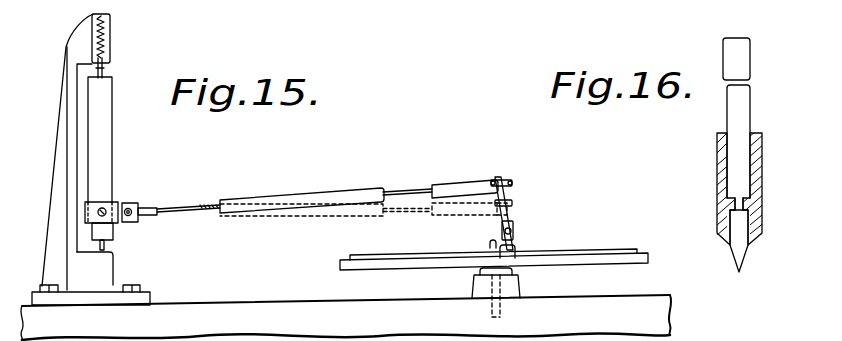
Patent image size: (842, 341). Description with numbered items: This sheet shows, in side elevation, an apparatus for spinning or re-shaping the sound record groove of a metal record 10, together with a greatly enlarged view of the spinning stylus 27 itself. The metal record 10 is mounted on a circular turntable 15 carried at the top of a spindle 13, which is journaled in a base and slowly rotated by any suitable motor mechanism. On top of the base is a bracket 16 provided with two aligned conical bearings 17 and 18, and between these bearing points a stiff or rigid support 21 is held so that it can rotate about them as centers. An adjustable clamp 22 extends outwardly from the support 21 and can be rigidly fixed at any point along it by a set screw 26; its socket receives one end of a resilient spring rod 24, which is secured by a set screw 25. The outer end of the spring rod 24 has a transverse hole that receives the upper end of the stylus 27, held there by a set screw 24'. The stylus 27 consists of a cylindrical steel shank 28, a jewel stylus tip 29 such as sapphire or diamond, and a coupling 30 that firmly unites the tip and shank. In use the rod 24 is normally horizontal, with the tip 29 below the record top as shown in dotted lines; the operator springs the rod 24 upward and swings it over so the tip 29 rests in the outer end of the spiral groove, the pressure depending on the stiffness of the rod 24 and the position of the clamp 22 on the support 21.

In FIG. 15, the metal record 10 is at (598, 248).
In FIG. 15, the spindle 13 is at (518, 283).
In FIG. 15, the turntable 15 is at (655, 256).
In FIG. 15, the bracket 16 is at (73, 132).
In FIG. 15, the conical bearing 17 is at (104, 248).
In FIG. 15, the conical bearing 18 is at (100, 70).
In FIG. 15, the support 21 is at (110, 132).
In FIG. 15, the adjustable clamp 22 is at (111, 203).
In FIG. 15, the resilient spring rod 24 is at (332, 194).
In FIG. 15, the set screw 24' is at (522, 184).
In FIG. 15, the set screw 25 is at (128, 203).
In FIG. 15, the set screw 26 is at (98, 211).
In FIG. 15, the spinning stylus 27 is at (513, 228).
In FIG. 16, the spinning stylus 27 is at (715, 140).
In FIG. 16, the cylindrical shank 28 is at (745, 110).
In FIG. 16, the stylus tip 29 is at (740, 237).
In FIG. 16, the coupling 30 is at (718, 165).